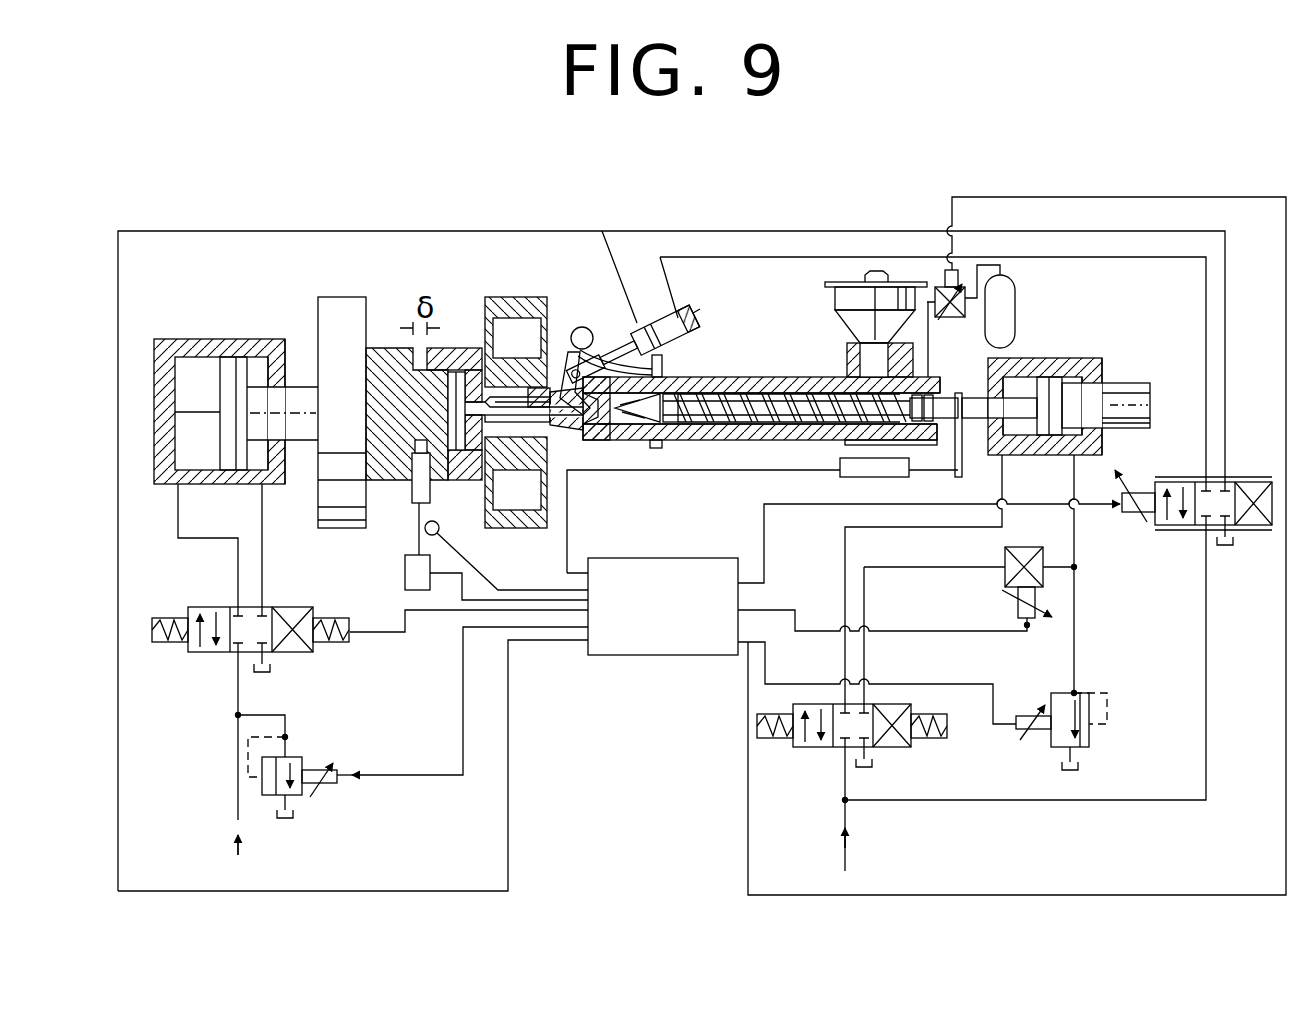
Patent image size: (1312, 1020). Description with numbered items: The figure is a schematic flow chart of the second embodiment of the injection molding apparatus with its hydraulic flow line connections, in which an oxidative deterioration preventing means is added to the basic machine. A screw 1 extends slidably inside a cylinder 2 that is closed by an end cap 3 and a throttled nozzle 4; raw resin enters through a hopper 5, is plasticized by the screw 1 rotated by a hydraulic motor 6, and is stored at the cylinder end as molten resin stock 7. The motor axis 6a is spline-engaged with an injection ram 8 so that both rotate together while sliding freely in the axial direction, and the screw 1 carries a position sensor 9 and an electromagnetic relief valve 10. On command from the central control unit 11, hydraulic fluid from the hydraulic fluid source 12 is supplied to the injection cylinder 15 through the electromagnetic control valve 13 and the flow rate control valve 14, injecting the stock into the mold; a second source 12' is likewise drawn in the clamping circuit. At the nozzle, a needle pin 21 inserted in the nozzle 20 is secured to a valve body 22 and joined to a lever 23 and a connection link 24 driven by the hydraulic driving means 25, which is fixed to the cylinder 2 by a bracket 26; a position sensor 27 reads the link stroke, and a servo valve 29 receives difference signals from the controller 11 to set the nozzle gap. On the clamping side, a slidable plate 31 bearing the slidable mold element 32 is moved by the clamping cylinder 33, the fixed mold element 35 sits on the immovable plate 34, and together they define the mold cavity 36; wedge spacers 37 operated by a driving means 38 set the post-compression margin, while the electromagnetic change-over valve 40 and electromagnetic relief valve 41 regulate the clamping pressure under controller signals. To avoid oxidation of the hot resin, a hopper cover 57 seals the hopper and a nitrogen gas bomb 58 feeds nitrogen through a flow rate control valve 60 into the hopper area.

The screw 1 is at (810, 410).
The cylinder 2 is at (778, 377).
The end cap 3 is at (648, 430).
The throttled nozzle 4 is at (588, 440).
The hopper 5 is at (845, 298).
The hydraulic motor 6 is at (1148, 383).
The axis of the hydraulic motor 6a is at (1055, 385).
The molten resin stock 7 is at (630, 442).
The injection ram 8 is at (970, 398).
The position sensor 9 is at (840, 478).
The electromagnetic relief valve 10 is at (1055, 750).
The central control unit 11 is at (630, 655).
The hydraulic fluid source 12 is at (866, 857).
The hydraulic pressure source 12' is at (264, 859).
The electromagnetic control valve 13 is at (812, 747).
The flow rate control valve 14 is at (1005, 585).
The injection cylinder 15 is at (1048, 358).
The nozzle 20 is at (445, 497).
The needle pin 21 is at (498, 452).
The valve body 22 is at (536, 386).
The lever 23 is at (665, 372).
The connection link 24 is at (573, 350).
The hydraulic driving means 25 is at (698, 314).
The bracket 26 is at (695, 330).
The position sensor 27 is at (580, 326).
The servo valve 29 is at (1170, 530).
The slidable plate 31 is at (320, 318).
The slidable mold element 32 is at (385, 348).
The clamping cylinder 33 is at (188, 345).
The immovable plate 34 is at (510, 297).
The fixed mold element 35 is at (448, 348).
The mold cavity 36 is at (458, 372).
The spacer member 37 is at (412, 500).
The driving means 38 is at (405, 585).
The electromagnetic change-over valve 40 is at (290, 607).
The electromagnetic relief valve 41 is at (300, 757).
The hopper cover 57 is at (842, 282).
The nitrogen gas bomb 58 is at (1016, 312).
The flow rate control valve 60 is at (940, 275).